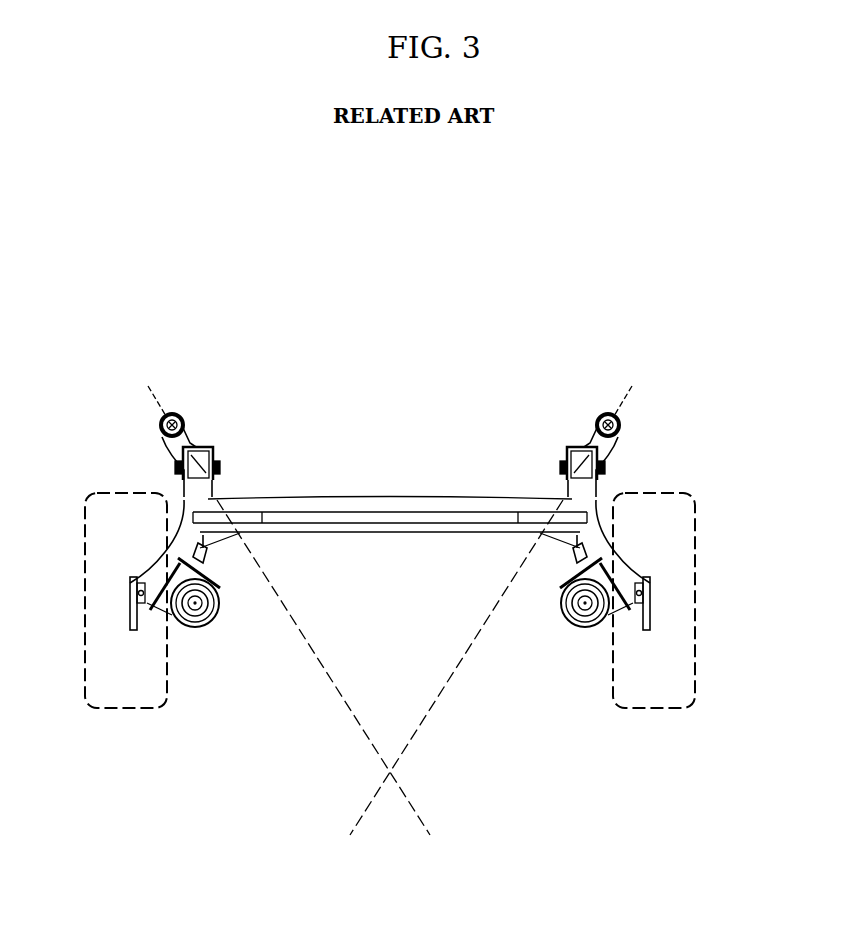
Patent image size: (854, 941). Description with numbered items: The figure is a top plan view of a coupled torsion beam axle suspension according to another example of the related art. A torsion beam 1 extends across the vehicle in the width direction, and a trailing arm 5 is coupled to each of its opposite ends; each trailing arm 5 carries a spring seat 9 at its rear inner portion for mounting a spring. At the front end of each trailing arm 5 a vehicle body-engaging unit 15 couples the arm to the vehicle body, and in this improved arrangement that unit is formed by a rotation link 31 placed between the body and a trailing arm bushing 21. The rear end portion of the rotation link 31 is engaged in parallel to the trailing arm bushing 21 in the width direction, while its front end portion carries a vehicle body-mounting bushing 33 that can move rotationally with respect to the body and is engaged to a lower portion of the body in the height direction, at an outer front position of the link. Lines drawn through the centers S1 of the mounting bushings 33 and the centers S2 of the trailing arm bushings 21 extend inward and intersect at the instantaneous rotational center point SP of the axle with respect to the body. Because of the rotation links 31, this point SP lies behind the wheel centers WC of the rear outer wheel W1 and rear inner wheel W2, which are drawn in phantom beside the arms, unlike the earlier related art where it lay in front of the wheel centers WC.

The torsion beam 1 is at (387, 533).
The trailing arm 5 is at (205, 558).
The spring seat 9 is at (218, 613).
The vehicle body-engaging unit 15 is at (153, 412).
The trailing arm bushing 21 is at (214, 455).
The rotation link 31 is at (162, 445).
The vehicle body-mounting bushing 33 is at (180, 414).
The center of mounting bushing S1 is at (184, 421).
The center of trailing arm bushing S2 is at (216, 472).
The instantaneous rotational center point SP is at (392, 772).
The rear outer wheel W1 is at (131, 710).
The rear inner wheel W2 is at (662, 710).
The wheel center WC is at (128, 598).